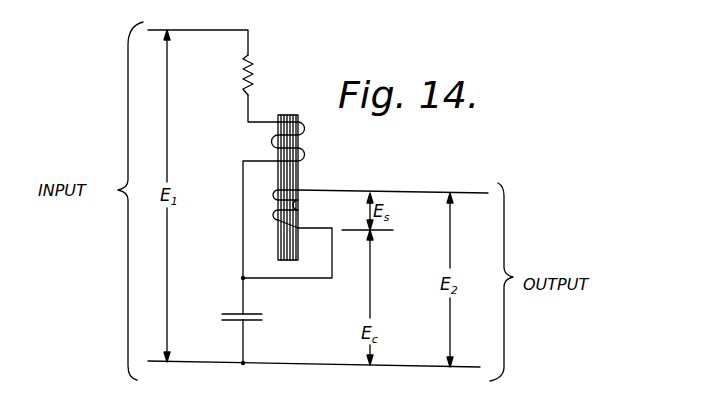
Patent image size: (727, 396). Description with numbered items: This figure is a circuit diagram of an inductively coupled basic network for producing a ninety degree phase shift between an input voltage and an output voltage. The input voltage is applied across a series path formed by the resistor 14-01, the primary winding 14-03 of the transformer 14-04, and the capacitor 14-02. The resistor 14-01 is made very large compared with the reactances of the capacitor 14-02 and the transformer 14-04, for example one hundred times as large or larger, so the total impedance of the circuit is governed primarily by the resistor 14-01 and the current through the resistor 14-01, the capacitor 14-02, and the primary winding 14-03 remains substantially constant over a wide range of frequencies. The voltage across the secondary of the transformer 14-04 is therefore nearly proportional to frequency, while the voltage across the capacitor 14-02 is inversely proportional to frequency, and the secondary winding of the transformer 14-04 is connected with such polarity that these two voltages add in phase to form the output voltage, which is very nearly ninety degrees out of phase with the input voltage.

The resistor 14-01 is at (251, 67).
The capacitor 14-02 is at (258, 316).
The primary winding 14-03 is at (301, 152).
The transformer 14-04 is at (303, 114).